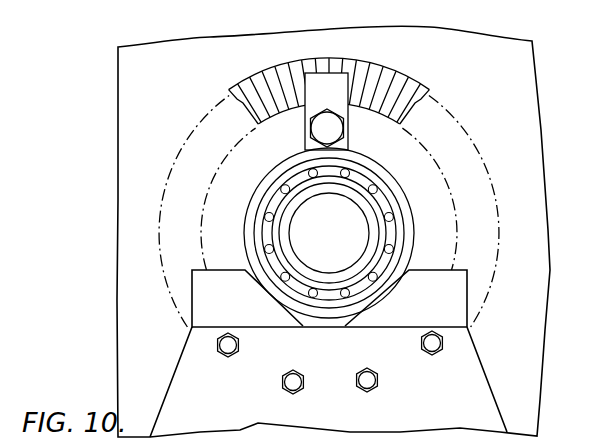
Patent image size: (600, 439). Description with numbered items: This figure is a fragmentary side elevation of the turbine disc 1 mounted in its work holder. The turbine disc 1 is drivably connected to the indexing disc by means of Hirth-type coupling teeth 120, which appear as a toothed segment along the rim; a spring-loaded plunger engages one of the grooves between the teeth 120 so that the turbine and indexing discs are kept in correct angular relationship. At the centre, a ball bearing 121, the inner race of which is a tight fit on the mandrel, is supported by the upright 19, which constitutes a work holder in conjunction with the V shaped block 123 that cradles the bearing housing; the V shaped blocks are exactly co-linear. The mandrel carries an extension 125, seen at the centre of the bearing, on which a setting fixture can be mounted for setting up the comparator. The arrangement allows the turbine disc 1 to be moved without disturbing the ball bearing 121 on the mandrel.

The turbine disc 1 is at (208, 48).
The upright 19 is at (480, 390).
The Hirth-type coupling teeth 120 is at (410, 86).
The ball bearing 121 is at (415, 228).
The V shaped block 123 is at (463, 300).
The extension 125 is at (339, 228).